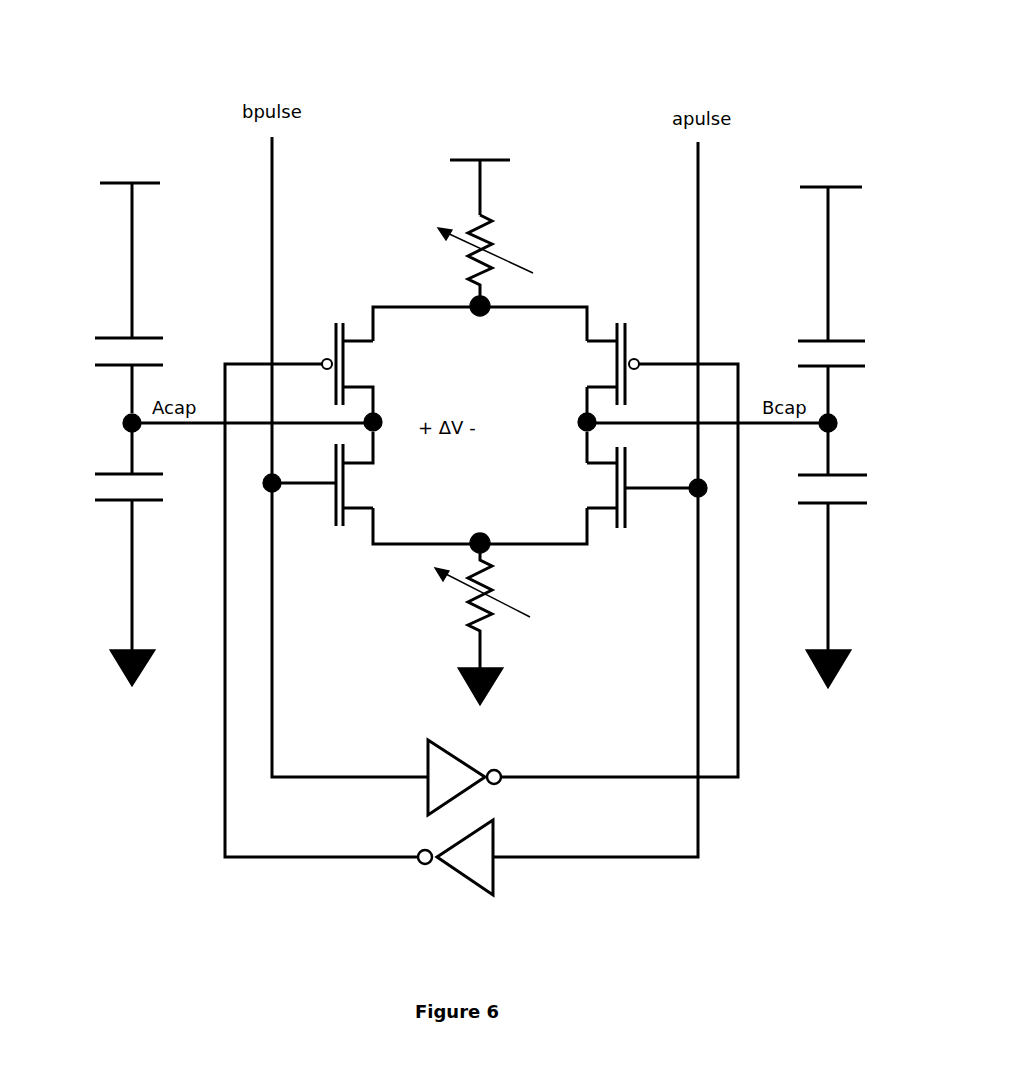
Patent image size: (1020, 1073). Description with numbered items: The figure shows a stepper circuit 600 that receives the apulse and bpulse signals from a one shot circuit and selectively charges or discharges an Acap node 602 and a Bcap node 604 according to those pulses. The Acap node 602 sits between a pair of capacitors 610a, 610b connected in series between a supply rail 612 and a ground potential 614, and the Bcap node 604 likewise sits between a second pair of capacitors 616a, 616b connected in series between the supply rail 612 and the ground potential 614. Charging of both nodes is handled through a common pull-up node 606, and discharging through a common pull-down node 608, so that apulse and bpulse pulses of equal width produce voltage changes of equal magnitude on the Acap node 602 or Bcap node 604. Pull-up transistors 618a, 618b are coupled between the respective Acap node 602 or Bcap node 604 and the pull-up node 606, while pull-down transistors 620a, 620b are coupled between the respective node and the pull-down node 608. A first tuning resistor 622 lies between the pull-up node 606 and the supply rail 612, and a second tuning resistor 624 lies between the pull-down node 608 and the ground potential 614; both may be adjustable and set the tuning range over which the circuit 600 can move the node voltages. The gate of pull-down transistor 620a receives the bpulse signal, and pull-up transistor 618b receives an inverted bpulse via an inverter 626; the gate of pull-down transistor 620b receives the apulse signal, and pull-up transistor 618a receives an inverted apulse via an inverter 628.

The stepper circuit 600 is at (108, 88).
The Acap node 602 is at (120, 426).
The Bcap node 604 is at (838, 425).
The pull-up node 606 is at (448, 304).
The pull-down node 608 is at (398, 548).
The capacitor 610a is at (113, 337).
The capacitor 610b is at (111, 505).
The supply rail 612 is at (138, 183).
The ground potential 614 is at (122, 672).
The capacitor 616a is at (815, 340).
The capacitor 616b is at (840, 508).
The pull-up transistor 618a is at (366, 340).
The pull-up transistor 618b is at (596, 340).
The pull-down transistor 620a is at (362, 516).
The pull-down transistor 620b is at (600, 516).
The first tuning resistor 622 is at (495, 238).
The second tuning resistor 624 is at (500, 608).
The inverter 626 is at (430, 742).
The inverter 628 is at (468, 880).